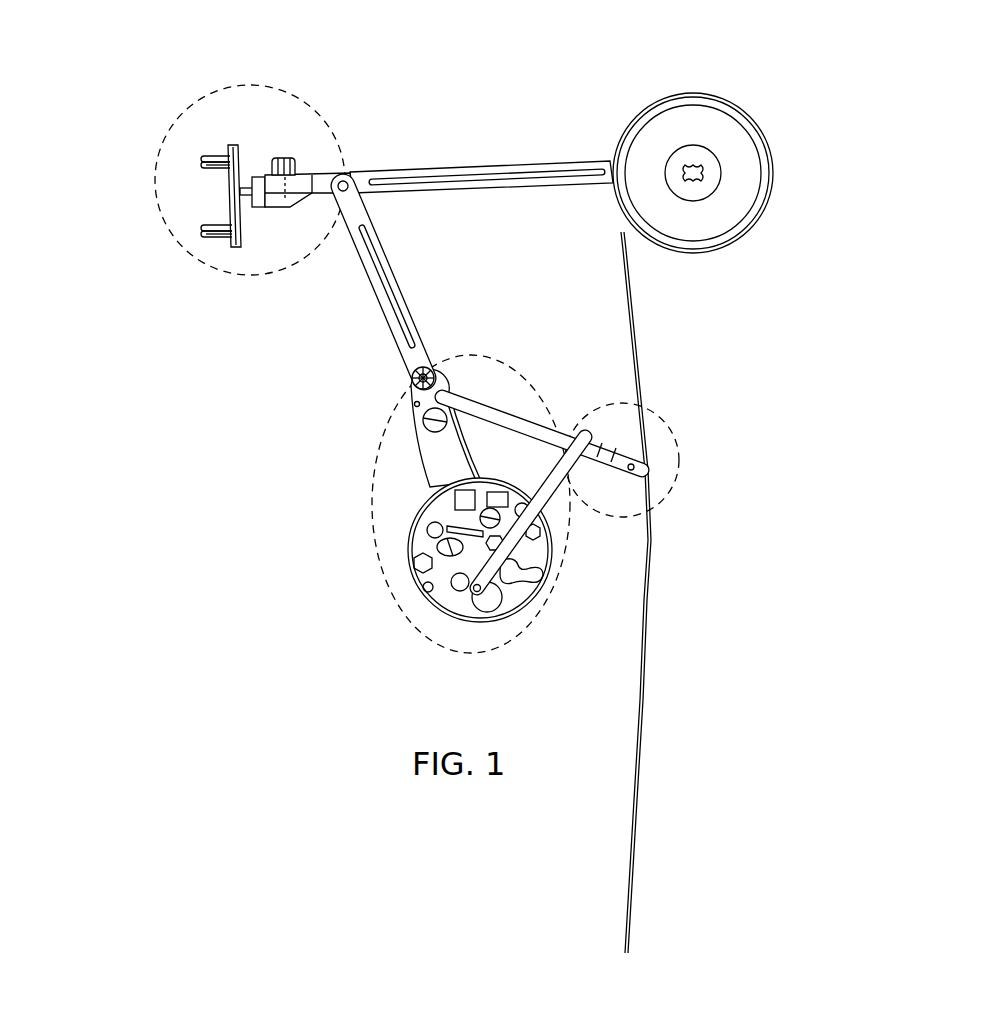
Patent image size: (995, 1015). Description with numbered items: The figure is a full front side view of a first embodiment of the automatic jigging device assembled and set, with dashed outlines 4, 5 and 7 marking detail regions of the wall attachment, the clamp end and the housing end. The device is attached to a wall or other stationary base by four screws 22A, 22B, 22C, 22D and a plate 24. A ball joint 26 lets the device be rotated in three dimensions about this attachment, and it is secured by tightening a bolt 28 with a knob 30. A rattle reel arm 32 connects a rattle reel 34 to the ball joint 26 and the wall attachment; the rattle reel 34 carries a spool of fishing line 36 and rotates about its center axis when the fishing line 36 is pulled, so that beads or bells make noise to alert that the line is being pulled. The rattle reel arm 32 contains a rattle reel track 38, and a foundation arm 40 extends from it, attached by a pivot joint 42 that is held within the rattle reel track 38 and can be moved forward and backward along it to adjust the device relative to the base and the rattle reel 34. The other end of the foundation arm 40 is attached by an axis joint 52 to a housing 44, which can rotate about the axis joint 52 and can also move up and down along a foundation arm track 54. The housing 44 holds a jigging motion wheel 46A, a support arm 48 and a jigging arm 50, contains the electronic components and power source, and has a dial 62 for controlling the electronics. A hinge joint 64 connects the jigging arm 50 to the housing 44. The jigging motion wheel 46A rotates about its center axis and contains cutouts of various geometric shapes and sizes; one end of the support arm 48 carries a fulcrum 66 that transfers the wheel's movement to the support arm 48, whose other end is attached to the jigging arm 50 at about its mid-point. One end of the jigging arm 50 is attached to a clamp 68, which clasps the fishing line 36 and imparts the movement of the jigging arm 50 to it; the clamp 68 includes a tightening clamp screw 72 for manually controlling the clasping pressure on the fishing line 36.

The mounting assembly detail region 4 is at (248, 270).
The linkage joint detail region 5 is at (662, 497).
The tensioner wheel detail region 7 is at (450, 637).
The screw 22A is at (202, 160).
The screw 22B is at (202, 166).
The screw 22C is at (203, 228).
The screw 22D is at (203, 234).
The plate 24 is at (225, 190).
The ball joint 26 is at (235, 147).
The bolt 28 is at (305, 172).
The knob 30 is at (285, 158).
The rattle reel arm 32 is at (460, 167).
The rattle reel 34 is at (733, 105).
The fishing line 36 is at (640, 653).
The rattle reel track 38 is at (553, 170).
The foundation arm 40 is at (385, 252).
The pivot joint 42 is at (350, 178).
The housing 44 is at (425, 467).
The jigging motion wheel 46A is at (440, 613).
The support arm 48 is at (556, 512).
The jigging arm 50 is at (503, 390).
The axis joint 52 is at (432, 370).
The foundation arm track 54 is at (397, 305).
The dial 62 is at (423, 420).
The hinge joint 64 is at (413, 400).
The fulcrum 66 is at (478, 597).
The clamp 68 is at (627, 453).
The tightening clamp screw 72 is at (645, 467).